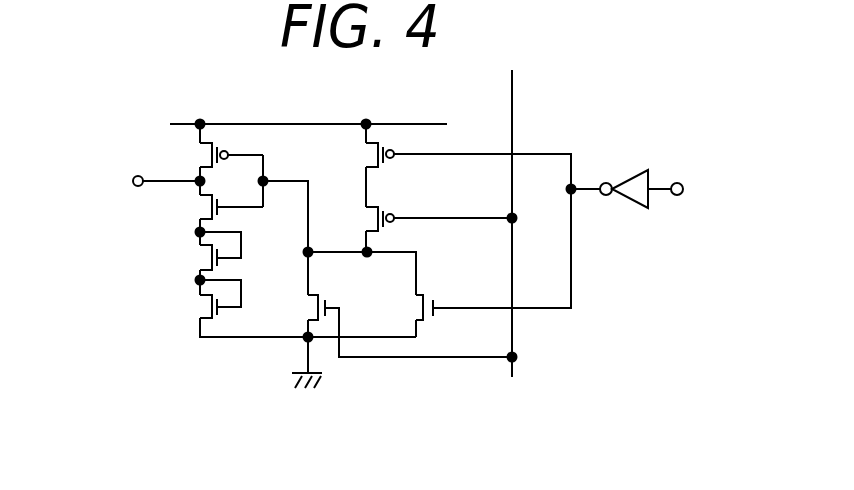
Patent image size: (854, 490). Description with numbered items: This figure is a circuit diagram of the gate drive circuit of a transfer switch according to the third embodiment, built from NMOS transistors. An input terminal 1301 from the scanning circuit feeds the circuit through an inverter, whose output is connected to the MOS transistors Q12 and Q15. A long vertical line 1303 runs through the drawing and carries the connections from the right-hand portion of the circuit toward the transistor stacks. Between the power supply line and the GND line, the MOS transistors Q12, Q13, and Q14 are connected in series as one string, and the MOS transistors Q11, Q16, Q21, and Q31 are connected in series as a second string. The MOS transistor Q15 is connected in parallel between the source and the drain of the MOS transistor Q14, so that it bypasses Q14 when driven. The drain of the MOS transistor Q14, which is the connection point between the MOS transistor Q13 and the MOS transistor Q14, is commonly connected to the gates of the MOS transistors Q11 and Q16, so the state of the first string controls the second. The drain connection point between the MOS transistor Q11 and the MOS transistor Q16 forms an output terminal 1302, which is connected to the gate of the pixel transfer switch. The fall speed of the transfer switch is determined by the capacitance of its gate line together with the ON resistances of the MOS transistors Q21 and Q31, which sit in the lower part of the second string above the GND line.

The input terminal 1301 is at (680, 195).
The output terminal 1302 is at (133, 184).
The signal line / bus 1303 is at (512, 123).
The MOS transistor Q11 is at (207, 153).
The MOS transistor Q16 is at (207, 208).
The MOS transistor Q21 is at (197, 252).
The MOS transistor Q31 is at (197, 302).
The MOS transistor Q12 is at (357, 153).
The MOS transistor Q13 is at (357, 218).
The MOS transistor Q14 is at (295, 308).
The MOS transistor Q15 is at (400, 308).